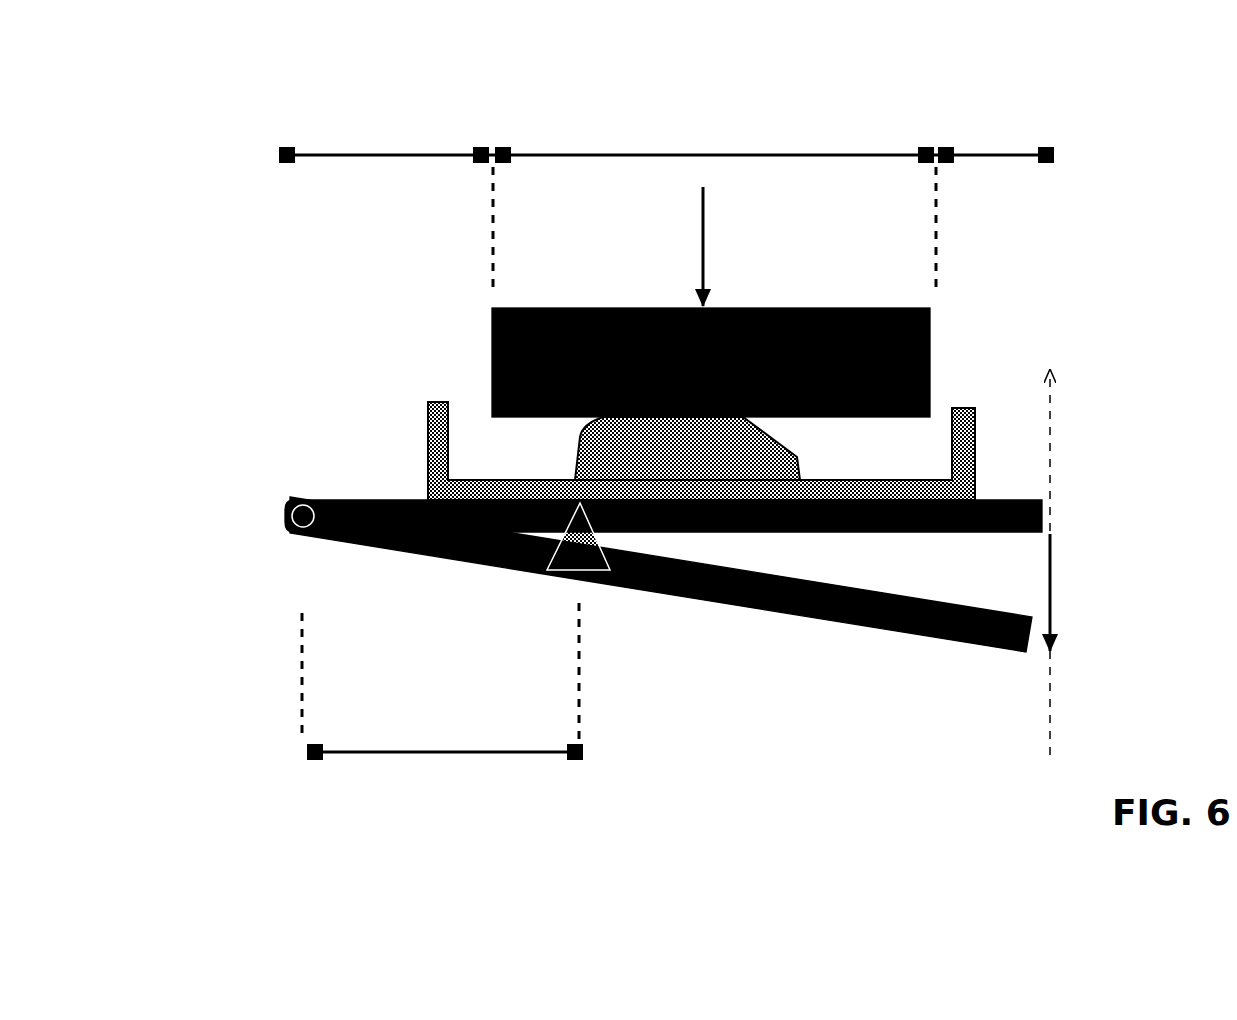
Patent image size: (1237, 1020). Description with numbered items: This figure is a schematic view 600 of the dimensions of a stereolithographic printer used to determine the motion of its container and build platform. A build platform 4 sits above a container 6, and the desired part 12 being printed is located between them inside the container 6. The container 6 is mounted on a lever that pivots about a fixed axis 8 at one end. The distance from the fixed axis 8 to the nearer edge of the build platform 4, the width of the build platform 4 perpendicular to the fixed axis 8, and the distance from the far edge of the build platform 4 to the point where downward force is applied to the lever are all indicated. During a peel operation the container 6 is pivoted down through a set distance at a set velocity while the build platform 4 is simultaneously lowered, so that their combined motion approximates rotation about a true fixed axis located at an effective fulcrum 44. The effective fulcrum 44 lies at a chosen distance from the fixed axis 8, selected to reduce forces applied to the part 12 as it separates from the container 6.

The sensor assembly arrangement 600 is at (215, 130).
The build platform 4 is at (488, 360).
The container 6 is at (969, 412).
The fixed axis 8 is at (298, 500).
The part 12 is at (755, 459).
The effective fulcrum 44 is at (585, 551).